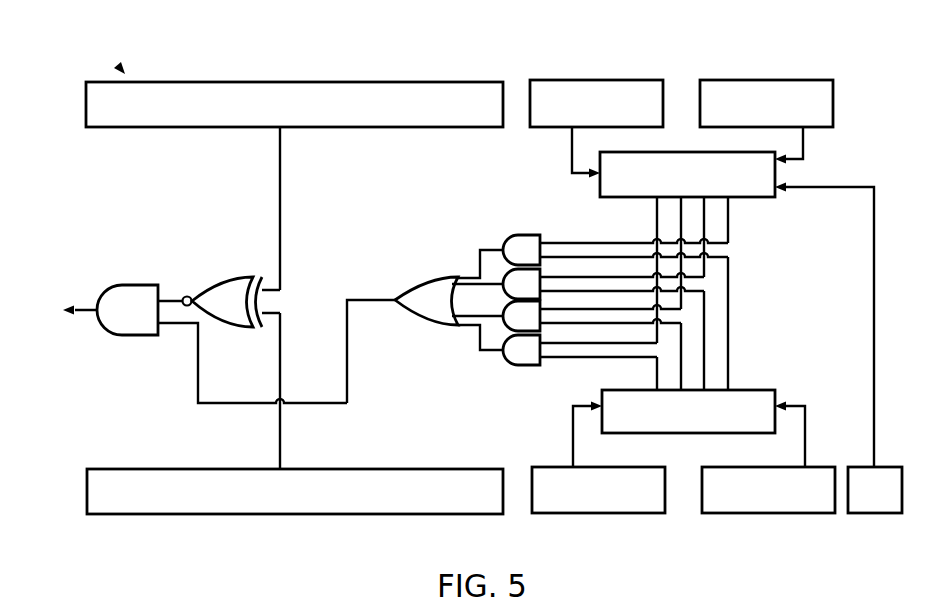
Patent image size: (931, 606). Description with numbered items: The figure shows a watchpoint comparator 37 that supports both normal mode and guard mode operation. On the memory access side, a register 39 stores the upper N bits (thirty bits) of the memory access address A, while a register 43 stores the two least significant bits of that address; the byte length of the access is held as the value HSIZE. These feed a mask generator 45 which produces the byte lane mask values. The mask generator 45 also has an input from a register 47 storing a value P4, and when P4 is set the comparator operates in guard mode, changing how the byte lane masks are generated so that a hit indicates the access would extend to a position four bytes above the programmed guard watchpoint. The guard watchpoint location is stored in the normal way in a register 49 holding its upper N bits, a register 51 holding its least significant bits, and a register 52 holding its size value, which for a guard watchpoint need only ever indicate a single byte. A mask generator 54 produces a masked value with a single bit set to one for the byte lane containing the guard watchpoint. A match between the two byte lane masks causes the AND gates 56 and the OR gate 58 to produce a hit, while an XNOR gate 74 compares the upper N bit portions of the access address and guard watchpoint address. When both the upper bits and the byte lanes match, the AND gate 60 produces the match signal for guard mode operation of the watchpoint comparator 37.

The watchpoint comparator 37 is at (121, 70).
The register 39 is at (389, 82).
The register 43 is at (583, 80).
The register 51 is at (778, 80).
The mask generator 45 is at (750, 197).
The mask generator 54 is at (750, 388).
The AND gates 56 is at (540, 232).
The OR gate 58 is at (430, 276).
The XNOR gate 74 is at (235, 276).
The AND gate 60 is at (118, 337).
The register 49 is at (145, 515).
The register 52 is at (795, 514).
The register 47 is at (884, 514).